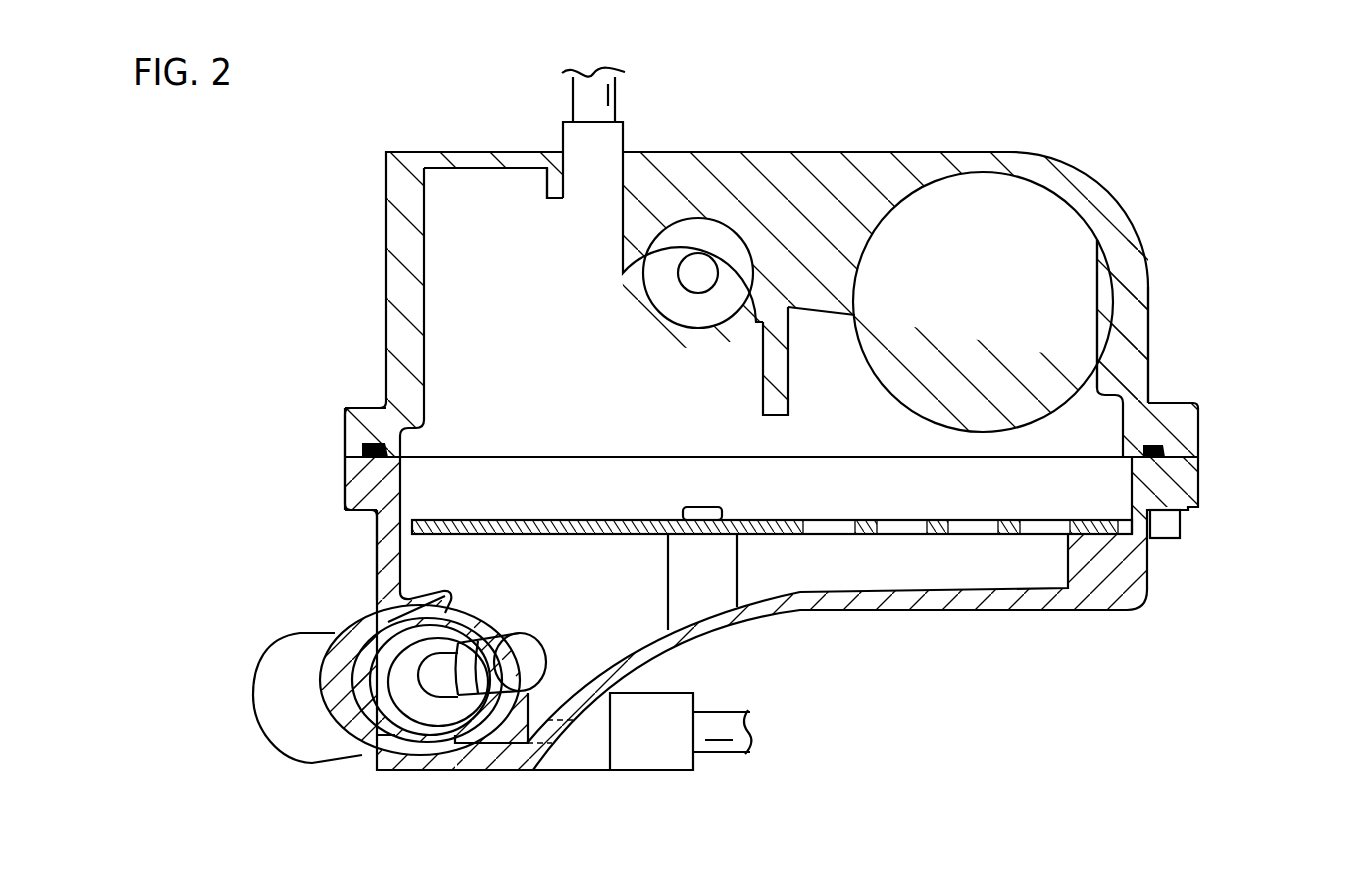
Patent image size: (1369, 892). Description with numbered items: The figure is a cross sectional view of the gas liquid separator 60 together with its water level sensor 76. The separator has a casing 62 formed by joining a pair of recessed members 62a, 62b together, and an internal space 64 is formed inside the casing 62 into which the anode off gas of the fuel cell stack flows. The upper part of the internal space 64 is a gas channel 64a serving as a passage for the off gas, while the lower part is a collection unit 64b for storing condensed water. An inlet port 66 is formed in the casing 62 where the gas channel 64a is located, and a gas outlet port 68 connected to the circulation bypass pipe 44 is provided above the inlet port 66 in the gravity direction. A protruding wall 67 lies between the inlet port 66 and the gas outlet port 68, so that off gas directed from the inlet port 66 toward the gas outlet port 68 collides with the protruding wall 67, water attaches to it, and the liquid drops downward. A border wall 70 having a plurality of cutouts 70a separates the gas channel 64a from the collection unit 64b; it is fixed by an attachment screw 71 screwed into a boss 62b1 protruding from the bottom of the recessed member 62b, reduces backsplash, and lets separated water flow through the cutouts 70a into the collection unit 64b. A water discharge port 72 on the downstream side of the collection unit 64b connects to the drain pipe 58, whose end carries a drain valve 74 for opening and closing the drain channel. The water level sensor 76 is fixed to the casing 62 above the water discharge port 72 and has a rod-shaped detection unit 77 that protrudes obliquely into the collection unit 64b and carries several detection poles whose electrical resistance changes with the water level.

The circulation bypass pipe 44 is at (583, 95).
The drain pipe 58 is at (712, 705).
The gas liquid separator 60 is at (364, 151).
The casing 62 is at (1295, 420).
The recessed member 62a is at (1137, 378).
The recessed member 62b is at (1137, 580).
The boss 62b1 is at (687, 577).
The internal space 64 is at (235, 422).
The gas channel 64a is at (460, 440).
The collection unit 64b is at (437, 572).
The inlet port 66 is at (1040, 205).
The protruding wall 67 is at (788, 368).
The gas outlet port 68 is at (568, 182).
The border wall 70 is at (758, 517).
The cutouts 70a is at (972, 527).
The attachment screw 71 is at (698, 512).
The water discharge port 72 is at (548, 733).
The drain valve 74 is at (633, 733).
The water level sensor 76 is at (266, 649).
The detection unit 77 is at (475, 680).